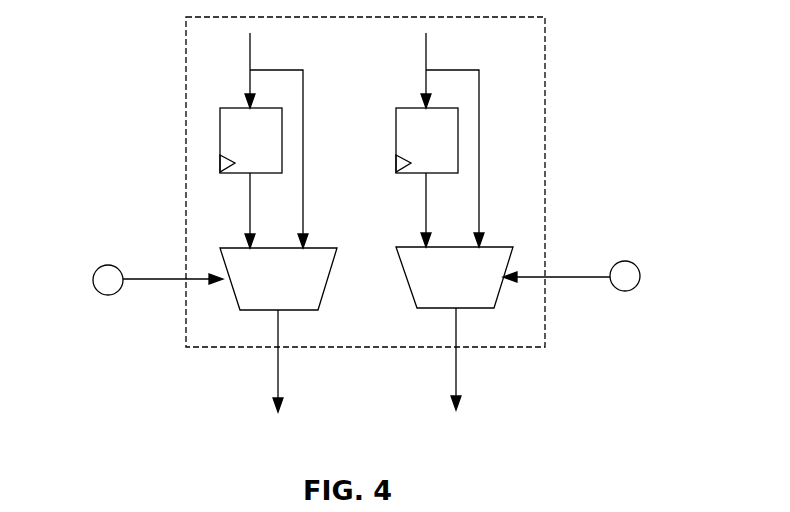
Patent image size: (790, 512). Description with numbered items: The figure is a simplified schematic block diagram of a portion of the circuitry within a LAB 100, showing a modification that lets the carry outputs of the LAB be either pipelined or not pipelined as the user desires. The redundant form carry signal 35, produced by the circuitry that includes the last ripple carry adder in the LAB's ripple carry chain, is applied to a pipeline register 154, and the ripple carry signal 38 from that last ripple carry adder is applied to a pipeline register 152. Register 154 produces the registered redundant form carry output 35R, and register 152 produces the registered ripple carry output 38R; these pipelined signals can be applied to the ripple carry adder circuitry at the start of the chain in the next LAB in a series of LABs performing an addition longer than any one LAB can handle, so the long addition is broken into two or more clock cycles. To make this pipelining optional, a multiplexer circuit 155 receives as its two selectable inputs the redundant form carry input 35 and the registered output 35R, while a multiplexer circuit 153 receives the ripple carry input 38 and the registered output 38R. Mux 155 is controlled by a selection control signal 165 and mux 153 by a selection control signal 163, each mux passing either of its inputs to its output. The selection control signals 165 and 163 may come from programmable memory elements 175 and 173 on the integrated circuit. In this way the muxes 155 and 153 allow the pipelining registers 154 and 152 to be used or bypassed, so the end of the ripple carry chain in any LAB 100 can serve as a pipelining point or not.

The LAB 100 is at (548, 45).
The redundant form carry signal 35 is at (255, 55).
The ripple carry signal 38 is at (431, 55).
The pipeline register 154 is at (220, 142).
The pipeline register 152 is at (458, 140).
The registered redundant form carry output 35R is at (250, 213).
The registered ripple carry output 38R is at (426, 213).
The multiplexer circuit 155 is at (228, 293).
The multiplexer circuit 153 is at (500, 290).
The selection control signal 165 is at (148, 278).
The selection control signal 163 is at (580, 270).
The programmable memory element 175 is at (108, 295).
The programmable memory element 173 is at (625, 292).